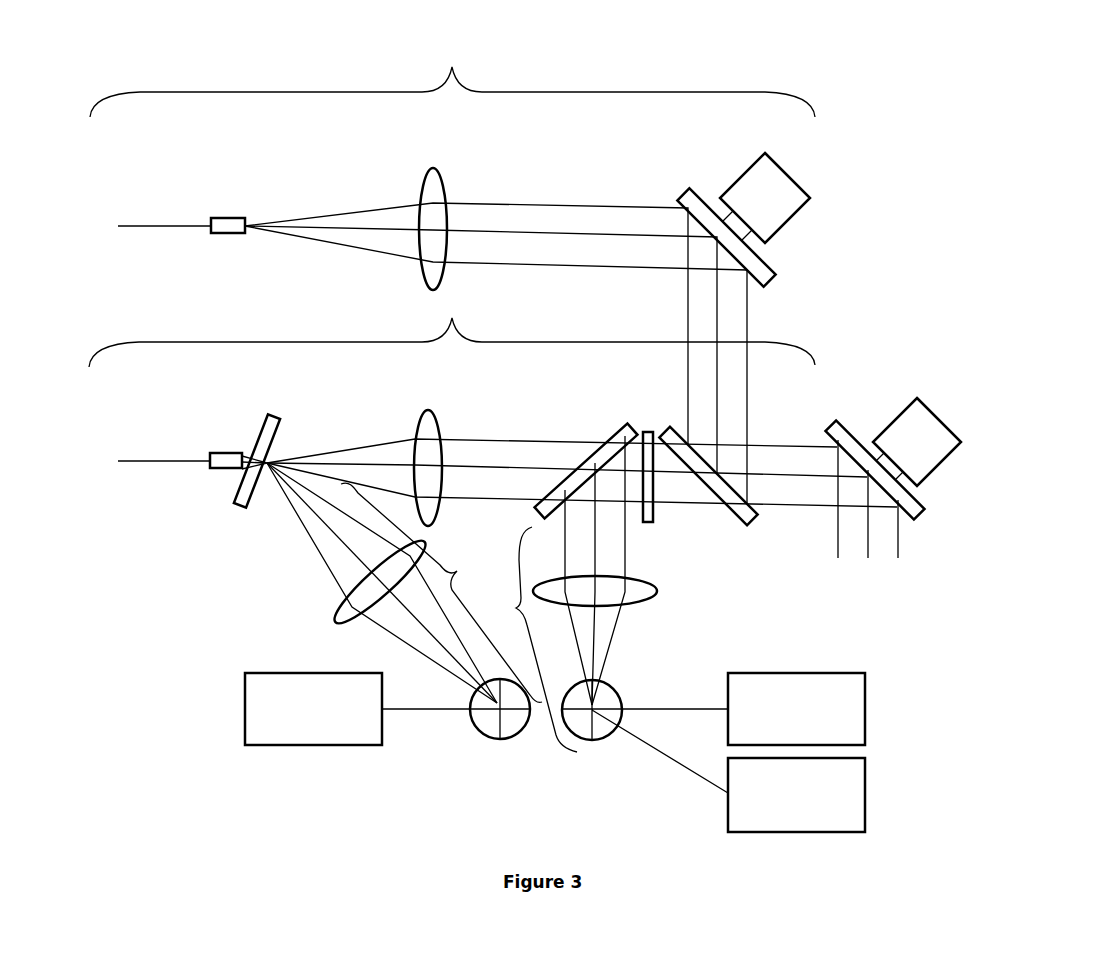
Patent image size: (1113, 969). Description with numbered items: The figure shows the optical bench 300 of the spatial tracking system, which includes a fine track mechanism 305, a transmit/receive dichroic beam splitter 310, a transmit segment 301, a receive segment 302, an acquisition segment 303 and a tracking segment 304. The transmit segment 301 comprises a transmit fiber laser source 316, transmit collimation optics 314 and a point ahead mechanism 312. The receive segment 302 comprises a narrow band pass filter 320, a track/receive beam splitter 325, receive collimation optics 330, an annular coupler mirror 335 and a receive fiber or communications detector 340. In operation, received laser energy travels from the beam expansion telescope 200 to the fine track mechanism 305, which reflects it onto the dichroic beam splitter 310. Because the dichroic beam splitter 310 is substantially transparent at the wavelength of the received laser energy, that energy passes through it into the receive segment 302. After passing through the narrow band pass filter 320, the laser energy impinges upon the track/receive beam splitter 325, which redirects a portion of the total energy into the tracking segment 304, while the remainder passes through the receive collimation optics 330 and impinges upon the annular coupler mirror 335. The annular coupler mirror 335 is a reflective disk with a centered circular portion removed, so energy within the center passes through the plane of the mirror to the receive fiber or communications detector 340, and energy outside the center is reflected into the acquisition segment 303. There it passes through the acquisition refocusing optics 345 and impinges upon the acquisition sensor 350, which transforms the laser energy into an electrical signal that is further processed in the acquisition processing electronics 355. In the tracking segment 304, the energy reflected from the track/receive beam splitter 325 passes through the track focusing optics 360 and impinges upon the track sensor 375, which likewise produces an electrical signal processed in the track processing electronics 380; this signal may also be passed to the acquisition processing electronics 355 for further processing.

The optical bench 300 is at (917, 120).
The transmit segment 301 is at (452, 79).
The receive segment 302 is at (452, 329).
The acquisition segment 303 is at (441, 592).
The tracking segment 304 is at (516, 608).
The fine track mechanism 305 is at (947, 462).
The transmit/receive dichroic beam splitter 310 is at (735, 487).
The point ahead mechanism 312 is at (803, 207).
The transmit collimation optics 314 is at (430, 168).
The transmit fiber laser source 316 is at (228, 215).
The narrow band pass filter 320 is at (645, 525).
The track/receive beam splitter 325 is at (623, 425).
The receive collimation optics 330 is at (425, 412).
The annular coupler mirror 335 is at (233, 502).
The receive fiber or communications detector 340 is at (228, 452).
The acquisition refocusing optics 345 is at (337, 622).
The acquisition sensor 350 is at (482, 735).
The acquisition processing electronics 355 is at (243, 703).
The track focusing optics 360 is at (655, 595).
The track sensor 375 is at (600, 742).
The track processing electronics 380 is at (867, 793).
The beam expansion telescope 200 is at (888, 545).